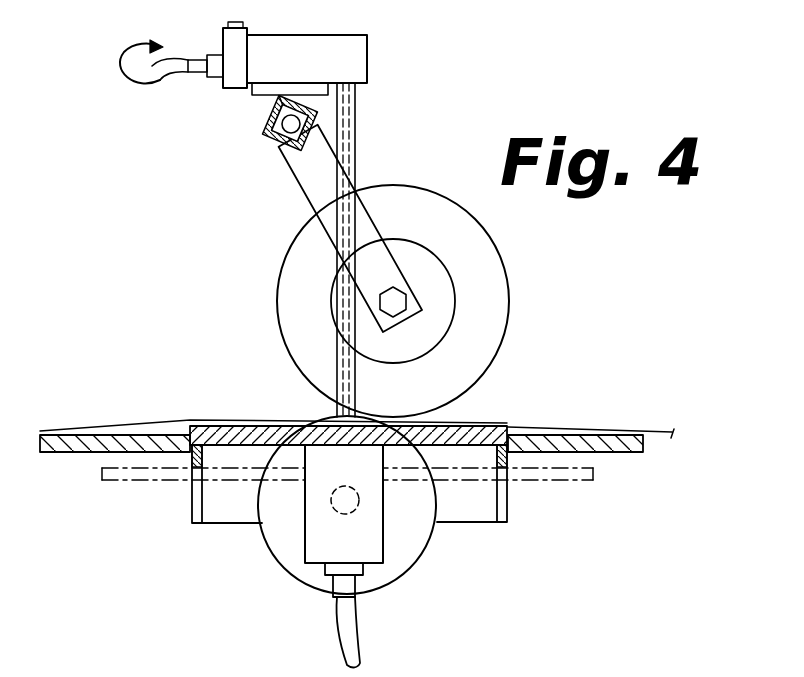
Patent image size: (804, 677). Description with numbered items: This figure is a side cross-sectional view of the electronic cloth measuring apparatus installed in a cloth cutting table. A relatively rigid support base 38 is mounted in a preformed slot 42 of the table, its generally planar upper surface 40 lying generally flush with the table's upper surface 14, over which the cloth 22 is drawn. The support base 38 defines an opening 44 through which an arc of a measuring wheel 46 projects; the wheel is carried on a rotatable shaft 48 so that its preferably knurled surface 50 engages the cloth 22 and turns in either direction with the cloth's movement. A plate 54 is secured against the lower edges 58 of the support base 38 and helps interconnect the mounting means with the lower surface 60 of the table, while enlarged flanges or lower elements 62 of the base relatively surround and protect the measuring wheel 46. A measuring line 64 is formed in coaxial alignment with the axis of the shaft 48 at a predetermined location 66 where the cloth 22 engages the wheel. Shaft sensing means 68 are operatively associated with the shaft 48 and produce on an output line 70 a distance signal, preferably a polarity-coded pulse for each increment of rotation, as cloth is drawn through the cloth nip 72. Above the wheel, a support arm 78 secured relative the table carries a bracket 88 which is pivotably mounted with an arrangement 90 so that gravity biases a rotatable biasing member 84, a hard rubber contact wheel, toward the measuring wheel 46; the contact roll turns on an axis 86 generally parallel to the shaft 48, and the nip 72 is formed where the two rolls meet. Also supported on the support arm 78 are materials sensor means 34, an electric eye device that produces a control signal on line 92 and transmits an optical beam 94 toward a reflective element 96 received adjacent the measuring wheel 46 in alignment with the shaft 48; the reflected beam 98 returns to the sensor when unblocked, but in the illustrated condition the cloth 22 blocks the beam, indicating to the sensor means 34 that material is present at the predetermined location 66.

The upper surface 14 is at (555, 437).
The cloth 22 is at (190, 424).
The materials sensor means 34 is at (382, 43).
The support base 38 is at (503, 424).
The upper surface 40 is at (250, 425).
The preformed slot 42 is at (270, 447).
The opening 44 is at (445, 408).
The measuring wheel 46 is at (280, 528).
The rotatable shaft 48 is at (368, 497).
The knurled surface 50 is at (428, 548).
The plate 54 is at (102, 480).
The lower edges 58 is at (508, 488).
The lower surface 60 is at (78, 455).
The lower elements 62 is at (487, 507).
The measuring line 64 is at (335, 414).
The predetermined location 66 is at (365, 402).
The shaft sensing means 68 is at (318, 567).
The output line 70 is at (355, 627).
The cloth nip 72 is at (401, 410).
The support arm 78 is at (266, 134).
The rotatable biasing member 84 is at (487, 248).
The axis 86 is at (388, 320).
The bracket 88 is at (309, 186).
The arrangement 90 is at (236, 106).
The line 92 is at (153, 76).
The optical beam 94 is at (330, 370).
The reflective element 96 is at (372, 445).
The reflected beam 98 is at (357, 100).